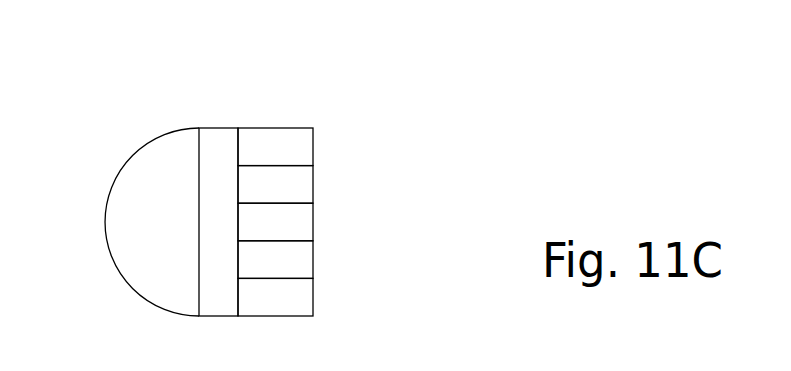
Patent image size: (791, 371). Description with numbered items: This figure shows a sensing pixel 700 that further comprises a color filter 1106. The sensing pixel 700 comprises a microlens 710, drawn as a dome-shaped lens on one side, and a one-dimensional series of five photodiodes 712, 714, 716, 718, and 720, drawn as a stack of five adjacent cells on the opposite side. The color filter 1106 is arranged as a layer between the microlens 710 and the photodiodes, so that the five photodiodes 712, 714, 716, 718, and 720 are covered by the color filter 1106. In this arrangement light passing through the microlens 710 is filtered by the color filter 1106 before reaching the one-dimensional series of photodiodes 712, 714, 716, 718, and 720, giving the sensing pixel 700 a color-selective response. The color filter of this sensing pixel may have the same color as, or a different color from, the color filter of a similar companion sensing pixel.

The sensing pixel 700 is at (171, 64).
The microlens 710 is at (143, 145).
The color filter 1106 is at (218, 128).
The photodiode 712 is at (313, 297).
The photodiode 714 is at (313, 258).
The photodiode 716 is at (313, 222).
The photodiode 718 is at (313, 185).
The photodiode 720 is at (313, 147).